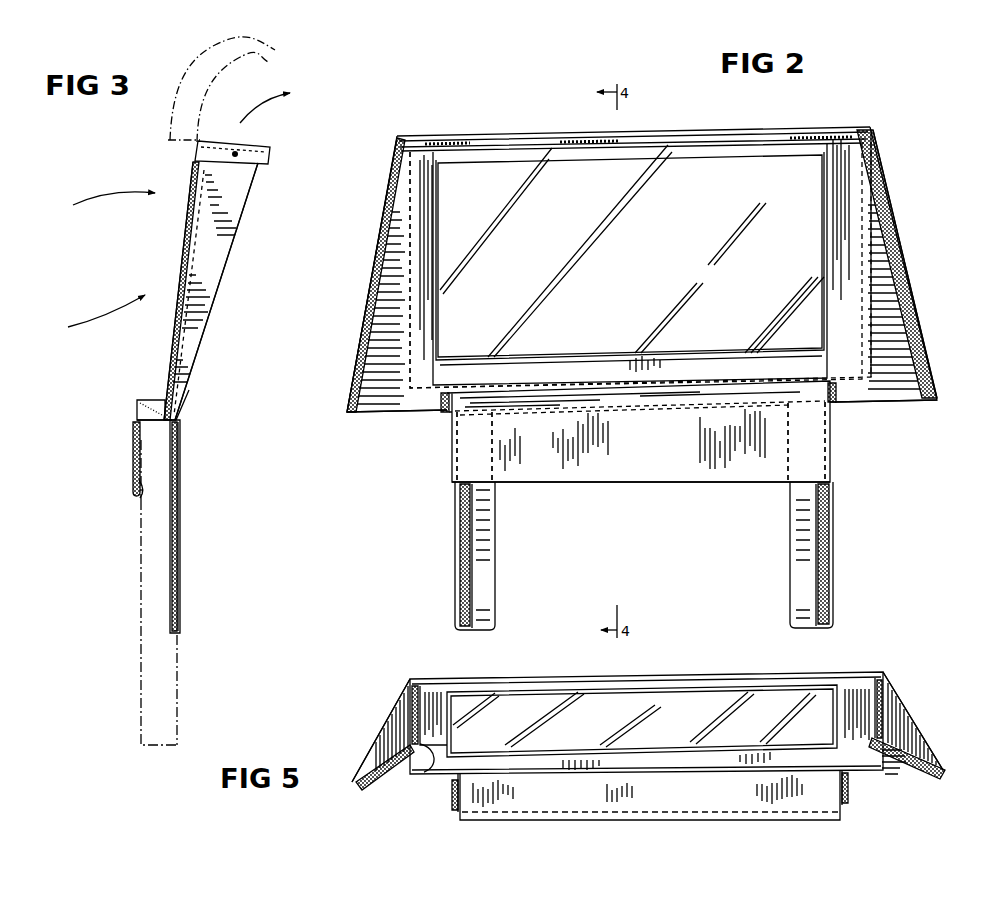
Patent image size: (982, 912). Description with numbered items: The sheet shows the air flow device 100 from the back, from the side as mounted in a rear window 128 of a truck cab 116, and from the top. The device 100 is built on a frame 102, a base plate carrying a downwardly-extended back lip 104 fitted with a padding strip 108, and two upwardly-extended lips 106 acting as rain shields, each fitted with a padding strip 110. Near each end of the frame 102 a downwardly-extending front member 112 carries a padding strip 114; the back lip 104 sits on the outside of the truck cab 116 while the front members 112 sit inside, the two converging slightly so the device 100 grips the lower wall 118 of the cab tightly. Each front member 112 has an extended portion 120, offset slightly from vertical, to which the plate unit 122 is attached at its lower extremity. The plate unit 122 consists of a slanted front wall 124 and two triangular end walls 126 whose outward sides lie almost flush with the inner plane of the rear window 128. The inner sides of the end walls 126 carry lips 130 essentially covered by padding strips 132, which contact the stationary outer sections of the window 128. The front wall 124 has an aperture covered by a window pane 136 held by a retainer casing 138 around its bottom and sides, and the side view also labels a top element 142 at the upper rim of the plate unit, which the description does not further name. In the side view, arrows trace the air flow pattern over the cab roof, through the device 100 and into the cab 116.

In FIG. 3, the air flow device 100 is at (252, 230).
In FIG. 2, the air flow device 100 is at (884, 165).
In FIG. 5, the air flow device 100 is at (378, 721).
In FIG. 3, the frame 102 is at (155, 427).
In FIG. 2, the frame 102 is at (638, 431).
In FIG. 5, the frame 102 is at (567, 800).
In FIG. 3, the downwardly-extended back lip 104 is at (132, 478).
In FIG. 2, the downwardly-extended back lip 104 is at (625, 475).
In FIG. 3, the upwardly-extended lips 106 is at (138, 421).
In FIG. 2, the upwardly-extended lips 106 is at (448, 420).
In FIG. 5, the upwardly-extended lips 106 is at (460, 802).
In FIG. 3, the padding strip 108 is at (138, 502).
In FIG. 2, the padding strip 108 is at (455, 466).
In FIG. 3, the padding strip 110 is at (140, 407).
In FIG. 2, the padding strip 110 is at (440, 410).
In FIG. 5, the padding strip 110 is at (452, 798).
In FIG. 3, the downwardly-extending front members 112 is at (182, 565).
In FIG. 2, the downwardly-extending front members 112 is at (491, 576).
In FIG. 3, the padding strip 114 is at (175, 602).
In FIG. 2, the padding strip 114 is at (462, 598).
In FIG. 3, the truck cab 116 is at (140, 683).
In FIG. 3, the lower wall of truck cab 118 is at (146, 552).
In FIG. 3, the extended portion 120 is at (182, 410).
In FIG. 3, the plate unit 122 is at (216, 286).
In FIG. 2, the plate unit 122 is at (885, 268).
In FIG. 5, the plate unit 122 is at (880, 672).
In FIG. 2, the front wall 124 is at (912, 333).
In FIG. 5, the front wall 124 is at (895, 774).
In FIG. 3, the end walls 126 is at (200, 350).
In FIG. 5, the end walls 126 is at (372, 748).
In FIG. 3, the rear window 128 is at (163, 257).
In FIG. 2, the lips 130 is at (345, 416).
In FIG. 5, the lips 130 is at (421, 752).
In FIG. 3, the padding strips 132 is at (170, 353).
In FIG. 2, the padding strips 132 is at (348, 386).
In FIG. 5, the padding strips 132 is at (360, 790).
In FIG. 2, the window pane 136 is at (683, 178).
In FIG. 2, the retainer casing 138 is at (428, 142).
In FIG. 3, the top cap 142 is at (269, 155).